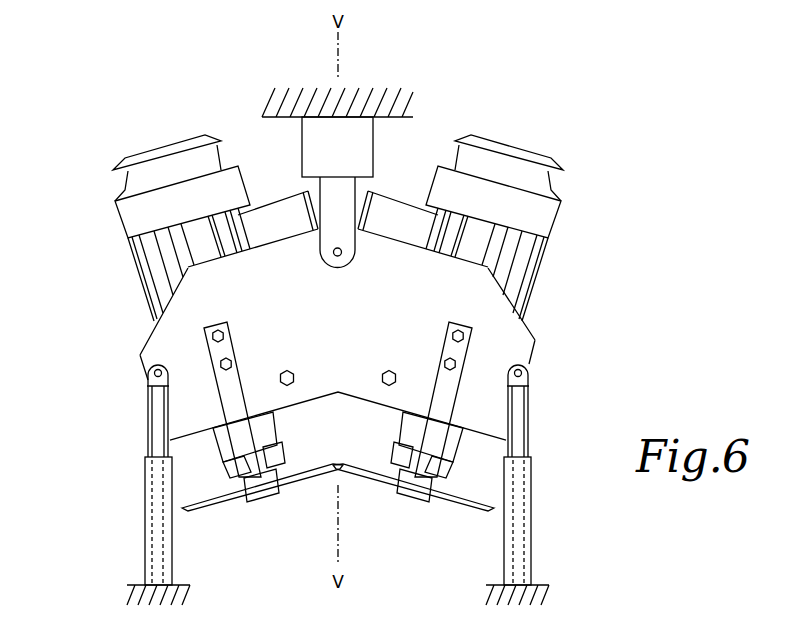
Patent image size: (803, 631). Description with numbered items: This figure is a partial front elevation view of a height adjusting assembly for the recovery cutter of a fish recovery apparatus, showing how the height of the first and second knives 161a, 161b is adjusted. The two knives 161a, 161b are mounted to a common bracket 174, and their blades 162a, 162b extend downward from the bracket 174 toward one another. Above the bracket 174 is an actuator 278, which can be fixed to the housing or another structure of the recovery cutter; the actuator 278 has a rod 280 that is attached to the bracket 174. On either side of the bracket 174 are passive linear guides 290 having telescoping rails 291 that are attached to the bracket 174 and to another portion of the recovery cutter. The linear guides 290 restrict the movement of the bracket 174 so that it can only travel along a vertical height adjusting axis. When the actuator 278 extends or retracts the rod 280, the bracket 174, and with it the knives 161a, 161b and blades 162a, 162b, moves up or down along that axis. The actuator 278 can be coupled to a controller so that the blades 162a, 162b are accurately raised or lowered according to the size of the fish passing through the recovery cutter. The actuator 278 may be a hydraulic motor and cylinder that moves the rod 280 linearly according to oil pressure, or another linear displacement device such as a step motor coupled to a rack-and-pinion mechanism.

The first knife 161a is at (142, 128).
The second knife 161b is at (536, 127).
The actuator 278 is at (305, 153).
The rod 280 is at (348, 218).
The bracket 174 is at (520, 338).
The telescoping rails 291 is at (147, 438).
The passive linear guides 290 is at (145, 535).
The first blade 162a is at (212, 507).
The second blade 162b is at (462, 507).